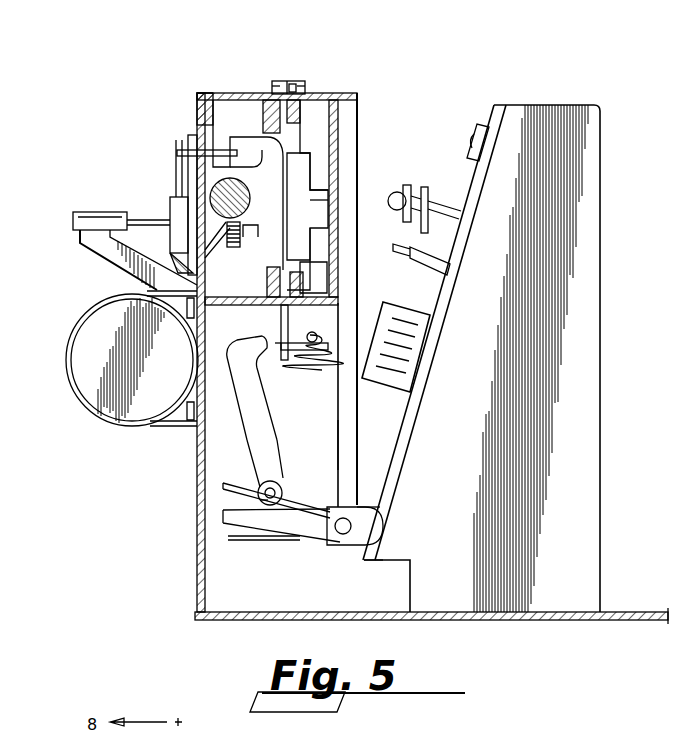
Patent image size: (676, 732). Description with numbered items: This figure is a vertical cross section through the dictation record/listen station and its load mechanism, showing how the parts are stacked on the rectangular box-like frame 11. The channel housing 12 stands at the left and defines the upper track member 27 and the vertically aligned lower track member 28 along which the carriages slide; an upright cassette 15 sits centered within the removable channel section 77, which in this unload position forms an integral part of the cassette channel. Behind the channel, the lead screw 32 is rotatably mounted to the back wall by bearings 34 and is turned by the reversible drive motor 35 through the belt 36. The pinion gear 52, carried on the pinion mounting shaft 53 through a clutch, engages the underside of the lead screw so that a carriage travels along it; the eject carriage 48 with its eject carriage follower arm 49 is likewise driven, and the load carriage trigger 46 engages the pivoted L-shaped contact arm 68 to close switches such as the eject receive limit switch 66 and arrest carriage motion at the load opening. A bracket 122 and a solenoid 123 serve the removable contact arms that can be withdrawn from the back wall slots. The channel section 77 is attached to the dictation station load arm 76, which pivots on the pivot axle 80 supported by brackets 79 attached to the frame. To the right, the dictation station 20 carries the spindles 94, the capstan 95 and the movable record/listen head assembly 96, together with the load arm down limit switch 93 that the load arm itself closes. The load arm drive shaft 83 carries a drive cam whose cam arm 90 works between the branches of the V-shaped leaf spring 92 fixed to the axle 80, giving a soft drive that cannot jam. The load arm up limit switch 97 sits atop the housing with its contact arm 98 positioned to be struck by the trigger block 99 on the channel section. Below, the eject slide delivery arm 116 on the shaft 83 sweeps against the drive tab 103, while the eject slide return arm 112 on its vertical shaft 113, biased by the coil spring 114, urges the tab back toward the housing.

The frame 11 is at (198, 550).
The channel housing 12 is at (207, 97).
The cassette 15 is at (318, 138).
The dictation record/listen station 20 is at (472, 187).
The upper track member 27 is at (262, 108).
The lower track member 28 is at (258, 300).
The lead screw 32 is at (210, 194).
The bearings 34 is at (205, 165).
The drive motor 35 is at (83, 380).
The belt 36 is at (213, 240).
The load carriage trigger 46 is at (250, 142).
The eject carriage 48 is at (272, 253).
The eject carriage follower arm 49 is at (310, 207).
The pinion gear 52 is at (257, 247).
The pinion mounting shaft 53 is at (247, 233).
The eject receive limit switch 66 is at (175, 237).
The contact arm 68 is at (185, 150).
The dictation station load arm 76 is at (348, 443).
The removable channel section 77 is at (320, 98).
The brackets 79 is at (357, 537).
The pivot axle 80 is at (343, 533).
The load arm drive shaft 83 is at (272, 507).
The cam arm 90 is at (233, 494).
The leaf spring 92 is at (297, 503).
The load arm down limit switch 93 is at (483, 125).
The spindles 94 is at (402, 193).
The capstan 95 is at (402, 250).
The record/listen head assembly 96 is at (410, 357).
The load arm up limit switch 97 is at (277, 82).
The contact arm 98 is at (291, 80).
The trigger block 99 is at (302, 82).
The drive tab 103 is at (275, 343).
The eject slide return arm 112 is at (290, 340).
The vertical shaft 113 is at (305, 350).
The coil spring 114 is at (322, 367).
The eject slide delivery arm 116 is at (263, 445).
The bracket 122 is at (97, 248).
The solenoid 123 is at (85, 218).